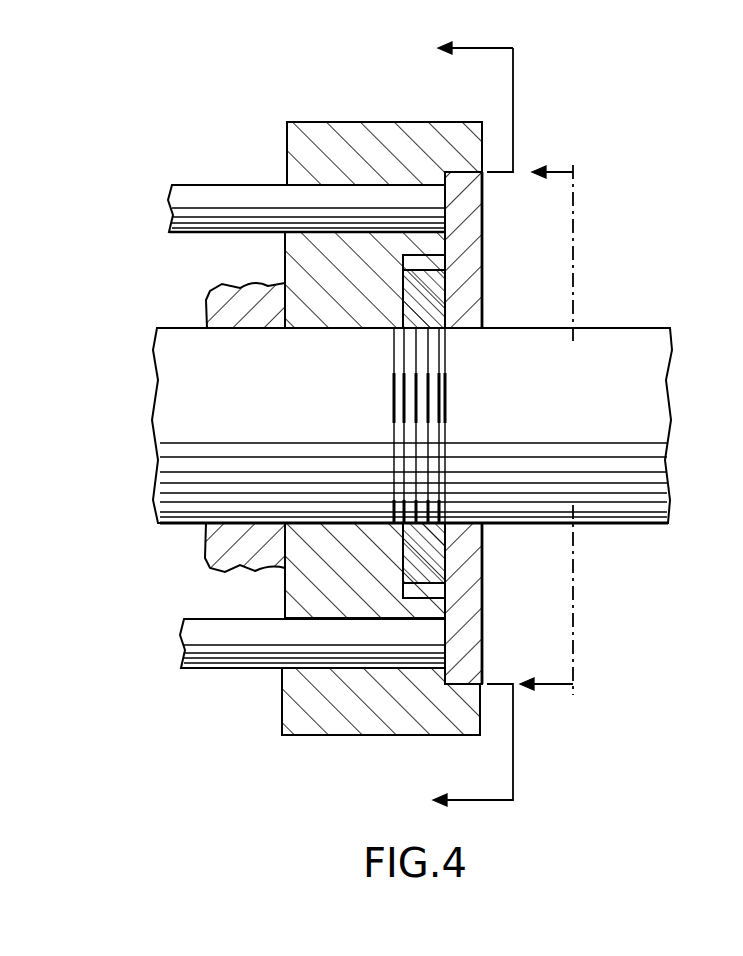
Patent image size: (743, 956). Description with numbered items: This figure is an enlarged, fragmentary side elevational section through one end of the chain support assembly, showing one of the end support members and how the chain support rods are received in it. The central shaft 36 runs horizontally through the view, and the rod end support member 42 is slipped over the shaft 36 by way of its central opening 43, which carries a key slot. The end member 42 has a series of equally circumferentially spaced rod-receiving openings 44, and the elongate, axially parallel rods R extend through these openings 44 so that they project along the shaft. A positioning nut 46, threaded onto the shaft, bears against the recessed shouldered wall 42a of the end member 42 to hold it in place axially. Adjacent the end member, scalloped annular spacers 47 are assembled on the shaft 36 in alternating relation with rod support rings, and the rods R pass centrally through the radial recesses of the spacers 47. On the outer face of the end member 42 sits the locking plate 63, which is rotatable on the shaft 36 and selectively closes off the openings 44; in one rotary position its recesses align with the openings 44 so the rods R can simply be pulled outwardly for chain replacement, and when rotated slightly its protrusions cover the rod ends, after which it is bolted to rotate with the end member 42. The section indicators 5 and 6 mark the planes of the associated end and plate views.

The rod end support member 42 is at (345, 138).
The recessed shouldered wall 42a is at (383, 295).
The central opening 43 is at (312, 318).
The rod-receiving openings 44 is at (390, 186).
The positioning nut 46 is at (447, 570).
The scalloped annular spacers 47 is at (236, 564).
The locking plate 63 is at (478, 250).
The central shaft 36 is at (608, 338).
The rods R is at (219, 192).
The section line 5 is at (461, 428).
The section line 6 is at (558, 431).